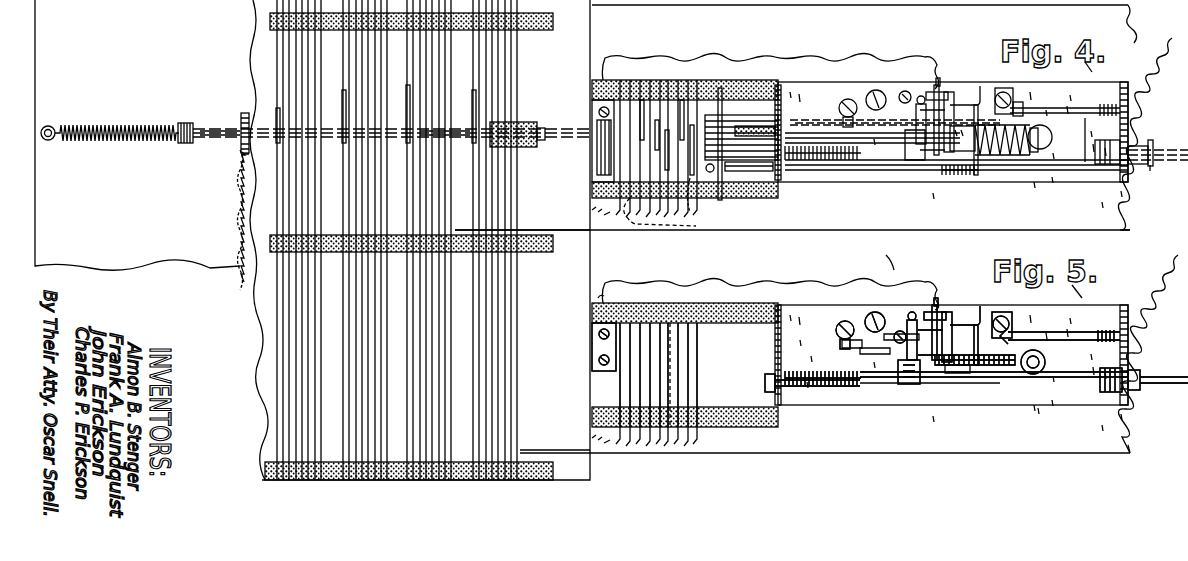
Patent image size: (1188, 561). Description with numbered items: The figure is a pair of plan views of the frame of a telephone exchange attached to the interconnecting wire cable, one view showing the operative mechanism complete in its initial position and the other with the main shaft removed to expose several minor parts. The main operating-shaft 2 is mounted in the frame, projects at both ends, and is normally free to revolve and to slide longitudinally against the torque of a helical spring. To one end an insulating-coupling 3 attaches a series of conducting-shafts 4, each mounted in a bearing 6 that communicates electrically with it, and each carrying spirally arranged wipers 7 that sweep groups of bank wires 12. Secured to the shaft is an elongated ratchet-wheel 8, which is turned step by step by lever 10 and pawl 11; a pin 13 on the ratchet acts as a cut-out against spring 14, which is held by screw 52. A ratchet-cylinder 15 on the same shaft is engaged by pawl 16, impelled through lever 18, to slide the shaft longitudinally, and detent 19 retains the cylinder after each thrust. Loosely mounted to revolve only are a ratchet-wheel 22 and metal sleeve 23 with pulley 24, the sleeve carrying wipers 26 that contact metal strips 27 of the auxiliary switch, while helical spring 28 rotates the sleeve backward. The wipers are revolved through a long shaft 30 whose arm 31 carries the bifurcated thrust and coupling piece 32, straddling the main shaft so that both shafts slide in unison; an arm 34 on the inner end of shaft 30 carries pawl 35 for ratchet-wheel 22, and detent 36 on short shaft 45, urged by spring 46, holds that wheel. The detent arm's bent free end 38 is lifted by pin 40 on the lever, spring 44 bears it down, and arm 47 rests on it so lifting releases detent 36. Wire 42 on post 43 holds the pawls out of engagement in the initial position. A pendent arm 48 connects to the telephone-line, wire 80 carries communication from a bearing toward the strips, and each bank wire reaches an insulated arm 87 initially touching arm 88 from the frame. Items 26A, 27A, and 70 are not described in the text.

In FIG. 4, the main operating-shaft 2 is at (1140, 148).
In FIG. 4, the insulating-coupling 3 is at (520, 126).
In FIG. 4, the conducting-shaft 4 is at (456, 141).
In FIG. 4, the bearing 6 is at (243, 121).
In FIG. 4, the wipers 7 is at (474, 105).
In FIG. 4, the ratchet-wheel 8 is at (908, 396).
In FIG. 5, the ratchet-wheel 8 is at (908, 396).
In FIG. 4, the lever 10 is at (950, 305).
In FIG. 5, the lever 10 is at (950, 305).
In FIG. 4, the pawl 11 is at (930, 305).
In FIG. 5, the pawl 11 is at (930, 305).
In FIG. 4, the wires 12 is at (300, 346).
In FIG. 4, the pin 13 is at (822, 118).
In FIG. 4, the spring 14 is at (842, 344).
In FIG. 5, the spring 14 is at (842, 344).
In FIG. 4, the ratchet-cylinder 15 is at (1012, 156).
In FIG. 4, the pawl 16 is at (948, 410).
In FIG. 5, the pawl 16 is at (948, 410).
In FIG. 5, the lever 18 is at (958, 372).
In FIG. 4, the detent 19 is at (1015, 335).
In FIG. 5, the detent 19 is at (1015, 335).
In FIG. 4, the ratchet-wheel 22 is at (745, 128).
In FIG. 4, the metal sleeve 23 is at (676, 95).
In FIG. 4, the pulley 24 is at (609, 158).
In FIG. 4, the wipers 26 is at (645, 88).
In FIG. 4, the contact wire end 26A is at (690, 214).
In FIG. 4, the metal strips 27 is at (697, 366).
In FIG. 5, the metal strips 27 is at (698, 366).
In FIG. 4, the center line 27A is at (680, 78).
In FIG. 5, the center line 27A is at (680, 302).
In FIG. 4, the helical spring 28 is at (612, 370).
In FIG. 5, the helical spring 28 is at (612, 371).
In FIG. 4, the long shaft 30 is at (1050, 172).
In FIG. 4, the arm 31 is at (948, 172).
In FIG. 4, the thrust and coupling piece 32 is at (960, 131).
In FIG. 4, the arm 34 is at (714, 175).
In FIG. 4, the pawl 35 is at (720, 88).
In FIG. 4, the detent 36 is at (765, 390).
In FIG. 5, the detent 36 is at (765, 390).
In FIG. 4, the free end of arm 38 is at (910, 310).
In FIG. 5, the free end of arm 38 is at (910, 310).
In FIG. 4, the pin 40 is at (936, 300).
In FIG. 5, the pin 40 is at (936, 300).
In FIG. 4, the wire 42 is at (965, 322).
In FIG. 5, the wire 42 is at (965, 322).
In FIG. 5, the post 43 is at (886, 255).
In FIG. 5, the spring 44 is at (884, 340).
In FIG. 4, the short shaft 45 is at (855, 385).
In FIG. 5, the short shaft 45 is at (855, 386).
In FIG. 4, the spring 46 is at (800, 386).
In FIG. 5, the spring 46 is at (800, 386).
In FIG. 5, the arm 47 is at (882, 352).
In FIG. 4, the pendent arm 48 is at (775, 32).
In FIG. 5, the pendent arm 48 is at (760, 256).
In FIG. 4, the screw 52 is at (848, 325).
In FIG. 5, the screw 52 is at (848, 325).
In FIG. 4, the casing 70 is at (1166, 42).
In FIG. 5, the casing 70 is at (1168, 262).
In FIG. 4, the wire 80 is at (240, 215).
In FIG. 4, the insulated arm 87 is at (1182, 160).
In FIG. 5, the insulated arm 87 is at (1106, 232).
In FIG. 4, the arm 88 is at (1150, 170).